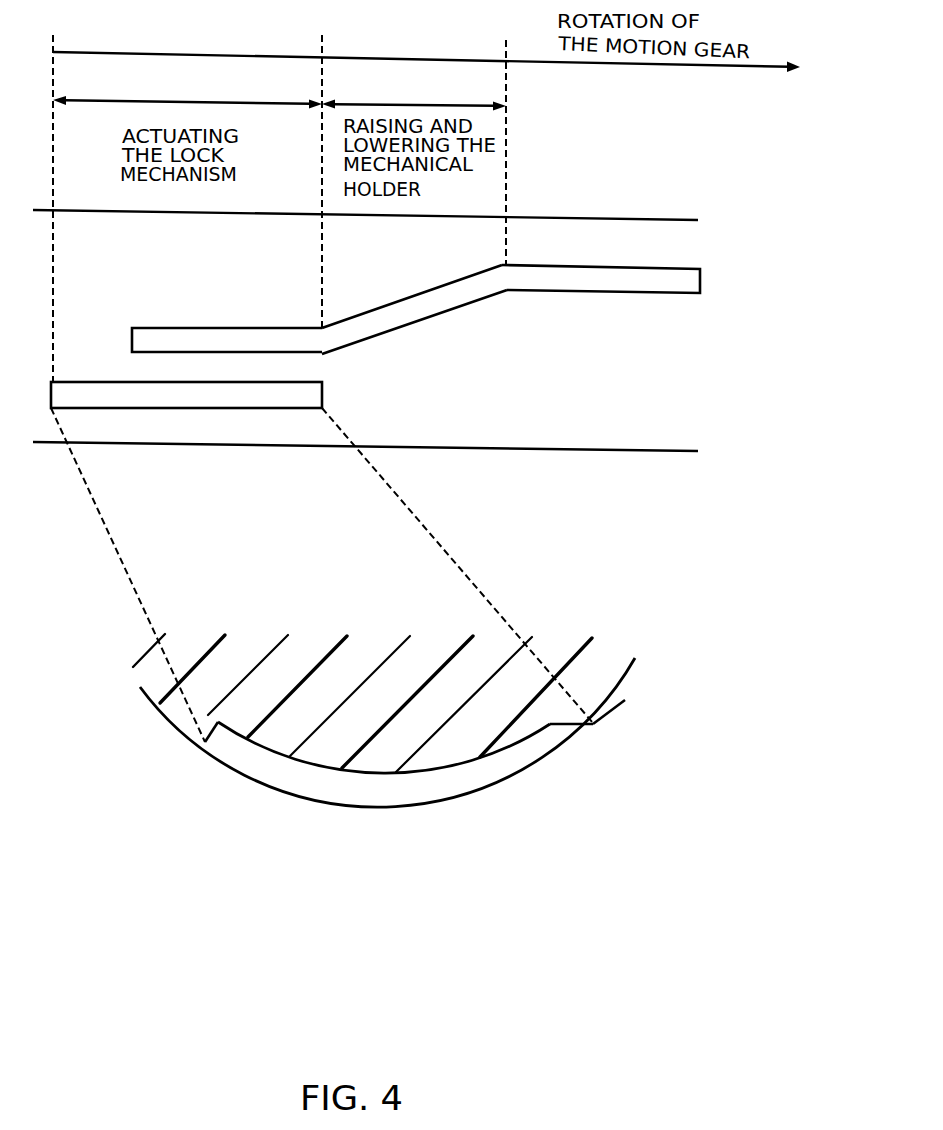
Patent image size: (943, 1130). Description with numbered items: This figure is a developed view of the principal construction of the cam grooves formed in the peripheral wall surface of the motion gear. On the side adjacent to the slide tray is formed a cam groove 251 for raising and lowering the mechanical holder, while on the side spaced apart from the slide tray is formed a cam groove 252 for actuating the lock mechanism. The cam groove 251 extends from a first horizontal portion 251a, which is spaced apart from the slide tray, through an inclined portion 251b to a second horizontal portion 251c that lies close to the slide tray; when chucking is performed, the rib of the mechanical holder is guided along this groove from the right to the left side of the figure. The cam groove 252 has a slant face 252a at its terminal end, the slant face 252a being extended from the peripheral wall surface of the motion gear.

The cam groove 251 is at (462, 318).
The first horizontal portion 251a is at (228, 328).
The inclined portion 251b is at (450, 310).
The second horizontal portion 251c is at (593, 293).
The cam groove 252 is at (338, 607).
The slant face 252a is at (577, 728).